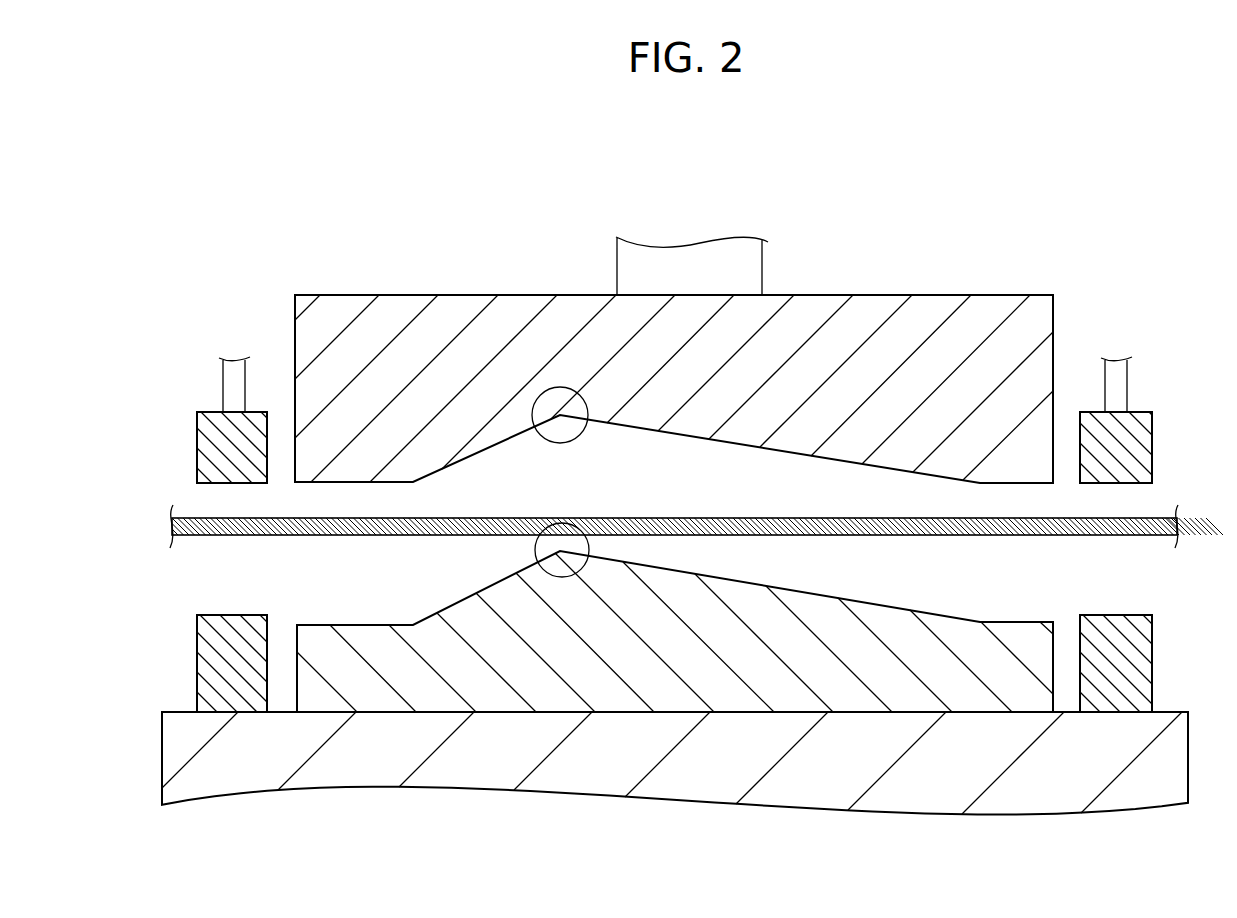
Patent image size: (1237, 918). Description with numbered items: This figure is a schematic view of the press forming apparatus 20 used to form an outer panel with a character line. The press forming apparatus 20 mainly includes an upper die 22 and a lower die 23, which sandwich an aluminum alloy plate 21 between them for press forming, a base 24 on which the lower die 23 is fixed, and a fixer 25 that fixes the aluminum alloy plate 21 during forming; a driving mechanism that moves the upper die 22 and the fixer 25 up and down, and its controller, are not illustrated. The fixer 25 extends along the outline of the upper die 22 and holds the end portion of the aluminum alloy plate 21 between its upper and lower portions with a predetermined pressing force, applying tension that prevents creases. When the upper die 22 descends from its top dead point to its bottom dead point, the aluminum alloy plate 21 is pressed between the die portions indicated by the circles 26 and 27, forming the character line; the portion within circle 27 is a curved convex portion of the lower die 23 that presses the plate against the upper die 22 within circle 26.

The press forming apparatus 20 is at (580, 184).
The aluminum alloy plate 21 is at (232, 535).
The upper die 22 is at (935, 310).
The lower die 23 is at (957, 633).
The base 24 is at (603, 786).
The fixer 25 is at (206, 449).
The circle 26 is at (563, 387).
The circle 27 is at (585, 567).